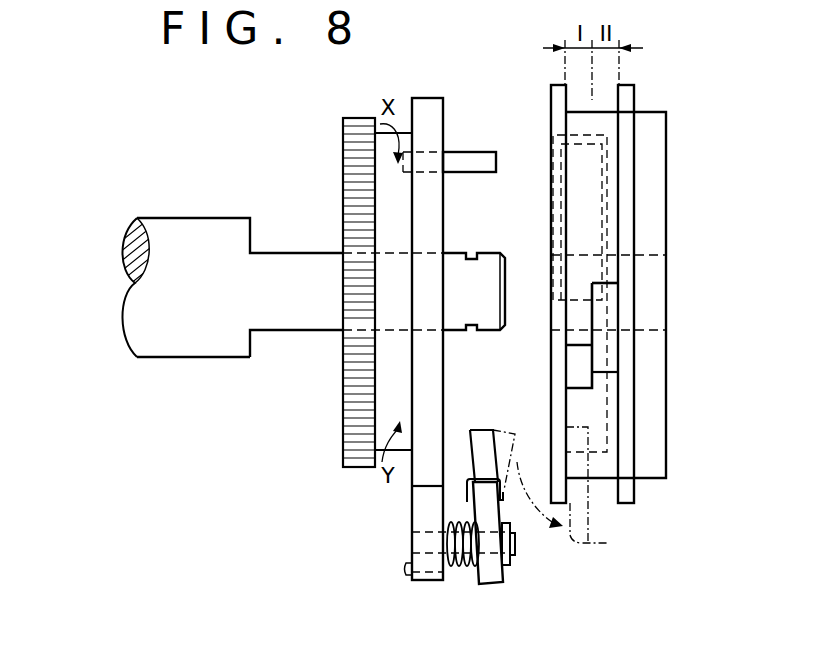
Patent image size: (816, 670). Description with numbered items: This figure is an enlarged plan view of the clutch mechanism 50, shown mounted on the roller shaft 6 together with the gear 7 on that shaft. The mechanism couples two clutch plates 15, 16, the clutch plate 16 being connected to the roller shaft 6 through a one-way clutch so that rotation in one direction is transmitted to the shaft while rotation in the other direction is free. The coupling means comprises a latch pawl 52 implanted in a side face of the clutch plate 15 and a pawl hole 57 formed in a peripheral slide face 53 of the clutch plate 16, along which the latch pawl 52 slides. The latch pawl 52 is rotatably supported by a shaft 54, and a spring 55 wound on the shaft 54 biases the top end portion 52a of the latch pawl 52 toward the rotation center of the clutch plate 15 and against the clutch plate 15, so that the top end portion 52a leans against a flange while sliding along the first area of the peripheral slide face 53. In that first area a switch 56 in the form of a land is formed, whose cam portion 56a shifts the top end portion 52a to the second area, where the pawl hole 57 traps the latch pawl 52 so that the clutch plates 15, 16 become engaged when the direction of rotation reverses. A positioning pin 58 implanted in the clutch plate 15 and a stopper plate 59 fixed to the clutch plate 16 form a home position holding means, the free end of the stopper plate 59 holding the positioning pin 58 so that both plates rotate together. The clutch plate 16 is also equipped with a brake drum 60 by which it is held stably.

The roller shaft 6 is at (288, 260).
The gear 7 is at (358, 118).
The clutch plate 15 is at (432, 104).
The clutch plate 16 is at (628, 97).
The clutch mechanism 50 is at (325, 145).
The latch pawl 52 is at (480, 462).
The top end portion 52a is at (513, 405).
The peripheral slide face 53 is at (578, 112).
The shaft 54 is at (513, 547).
The spring 55 is at (463, 567).
The switch 56 is at (576, 316).
The cam portion 56a is at (592, 283).
The pawl hole 57 is at (612, 288).
The positioning pin 58 is at (480, 155).
The stopper plate 59 is at (556, 188).
The brake drum 60 is at (657, 203).